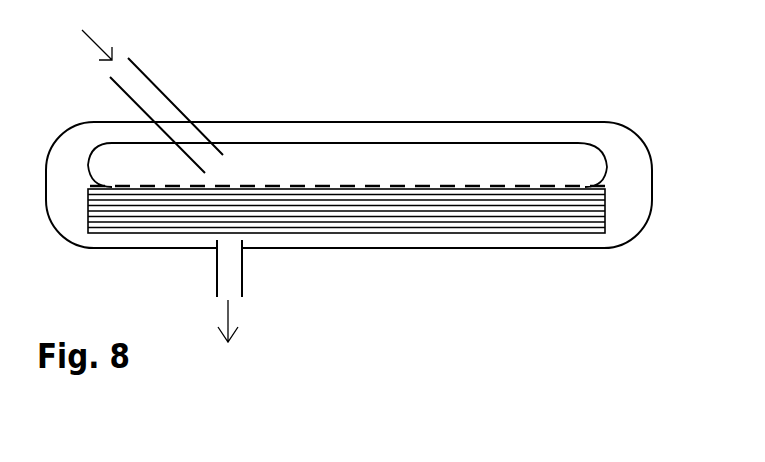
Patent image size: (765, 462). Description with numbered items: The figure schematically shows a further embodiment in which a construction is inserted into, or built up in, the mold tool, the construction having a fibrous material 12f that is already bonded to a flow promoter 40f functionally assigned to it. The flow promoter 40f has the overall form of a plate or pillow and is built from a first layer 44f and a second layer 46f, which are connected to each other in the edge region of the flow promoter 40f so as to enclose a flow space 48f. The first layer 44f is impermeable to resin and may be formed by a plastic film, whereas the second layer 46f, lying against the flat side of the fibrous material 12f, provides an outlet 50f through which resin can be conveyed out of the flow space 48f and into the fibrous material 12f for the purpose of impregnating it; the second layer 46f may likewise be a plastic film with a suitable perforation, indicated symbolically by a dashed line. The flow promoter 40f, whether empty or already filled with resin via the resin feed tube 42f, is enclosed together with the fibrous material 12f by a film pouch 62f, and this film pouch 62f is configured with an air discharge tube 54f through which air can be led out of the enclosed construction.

The flow promoter 40f is at (529, 156).
The resin feed tube 42f is at (148, 80).
The first layer 44f is at (279, 143).
The second layer 46f is at (197, 188).
The flow space 48f is at (373, 160).
The outlet 50f is at (423, 185).
The fibrous material 12f is at (480, 220).
The air discharge tube 54f is at (242, 277).
The film pouch 62f is at (633, 233).